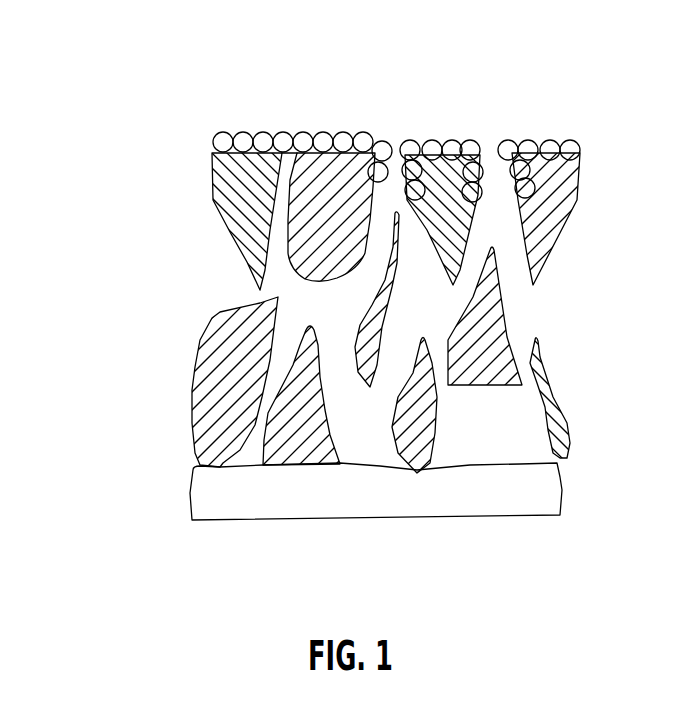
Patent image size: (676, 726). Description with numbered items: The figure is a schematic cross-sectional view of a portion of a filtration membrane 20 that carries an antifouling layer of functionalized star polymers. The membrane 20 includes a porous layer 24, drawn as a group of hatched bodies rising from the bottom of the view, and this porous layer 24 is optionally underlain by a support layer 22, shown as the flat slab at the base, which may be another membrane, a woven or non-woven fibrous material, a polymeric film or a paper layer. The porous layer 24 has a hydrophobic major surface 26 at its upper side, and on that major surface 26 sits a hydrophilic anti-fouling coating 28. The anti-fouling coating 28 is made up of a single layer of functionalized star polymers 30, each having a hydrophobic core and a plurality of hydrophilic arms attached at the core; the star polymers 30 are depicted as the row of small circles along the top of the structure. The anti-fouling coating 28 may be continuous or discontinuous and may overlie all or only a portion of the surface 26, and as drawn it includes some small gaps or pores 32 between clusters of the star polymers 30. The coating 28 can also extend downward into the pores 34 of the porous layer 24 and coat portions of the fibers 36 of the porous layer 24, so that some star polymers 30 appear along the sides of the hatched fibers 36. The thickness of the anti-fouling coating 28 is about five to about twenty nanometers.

The filtration membrane 20 is at (91, 117).
The support layer 22 is at (207, 500).
The porous layer 24 is at (157, 155).
The major surface 26 is at (213, 155).
The anti-fouling coating 28 is at (358, 108).
The functionalized star polymers 30 is at (300, 140).
The gaps or pores 32 is at (397, 150).
The pores 34 is at (512, 293).
The fibers 36 is at (555, 206).